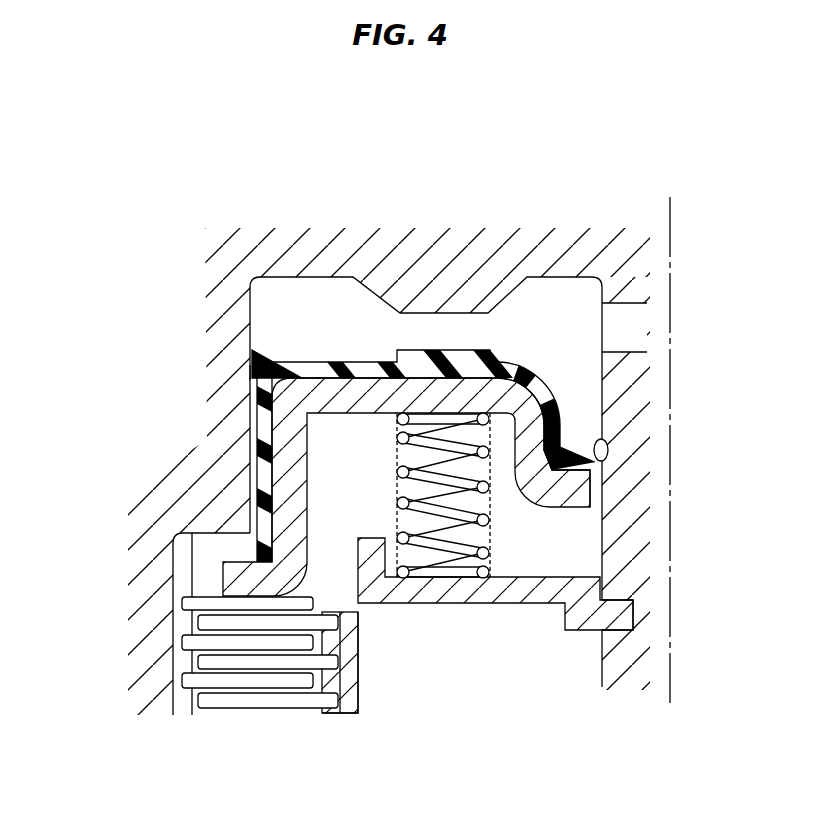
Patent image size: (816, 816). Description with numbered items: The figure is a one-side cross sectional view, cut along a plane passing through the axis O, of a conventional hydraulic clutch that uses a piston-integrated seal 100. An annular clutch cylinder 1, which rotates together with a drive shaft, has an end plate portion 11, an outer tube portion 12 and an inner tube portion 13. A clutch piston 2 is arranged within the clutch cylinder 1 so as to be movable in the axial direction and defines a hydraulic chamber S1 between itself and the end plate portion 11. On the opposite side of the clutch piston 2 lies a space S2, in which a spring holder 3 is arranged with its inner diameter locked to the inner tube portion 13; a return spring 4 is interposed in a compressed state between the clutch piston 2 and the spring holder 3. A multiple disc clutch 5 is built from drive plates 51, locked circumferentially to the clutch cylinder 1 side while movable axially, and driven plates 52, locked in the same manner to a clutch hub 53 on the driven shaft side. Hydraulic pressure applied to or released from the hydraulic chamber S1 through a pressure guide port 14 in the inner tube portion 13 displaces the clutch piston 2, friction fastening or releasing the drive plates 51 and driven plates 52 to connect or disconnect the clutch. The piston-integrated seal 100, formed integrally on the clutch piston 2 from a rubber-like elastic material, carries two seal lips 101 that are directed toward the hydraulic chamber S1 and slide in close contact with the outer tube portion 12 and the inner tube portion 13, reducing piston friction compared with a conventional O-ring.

The clutch cylinder 1 is at (432, 431).
The end plate portion 11 is at (448, 272).
The outer tube portion 12 is at (230, 413).
The inner tube portion 13 is at (670, 483).
The pressure guide port 14 is at (632, 325).
The clutch piston 2 is at (437, 368).
The piston-integrated seal 100 is at (249, 372).
The seal lip 101 is at (248, 360).
The spring holder 3 is at (475, 592).
The return spring 4 is at (390, 500).
The multiple disc clutch 5 is at (246, 667).
The drive plate 51 is at (178, 680).
The driven plate 52 is at (332, 700).
The clutch hub 53 is at (360, 708).
The hydraulic chamber S1 is at (557, 316).
The space S2 is at (547, 655).
The axis O is at (669, 438).